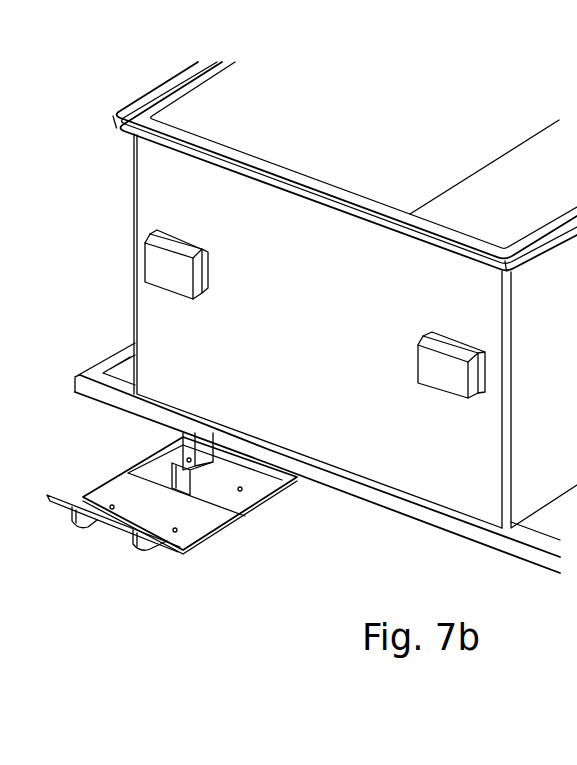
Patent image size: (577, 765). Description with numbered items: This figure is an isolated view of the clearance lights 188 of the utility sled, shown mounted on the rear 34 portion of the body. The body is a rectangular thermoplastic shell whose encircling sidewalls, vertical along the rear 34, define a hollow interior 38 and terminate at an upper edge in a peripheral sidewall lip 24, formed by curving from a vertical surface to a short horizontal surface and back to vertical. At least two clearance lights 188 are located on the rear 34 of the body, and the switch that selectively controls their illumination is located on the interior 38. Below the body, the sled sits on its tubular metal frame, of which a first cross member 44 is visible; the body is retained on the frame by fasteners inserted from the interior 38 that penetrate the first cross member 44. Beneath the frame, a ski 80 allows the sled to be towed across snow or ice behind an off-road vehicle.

The sidewall lip 24 is at (210, 141).
The rear 34 is at (150, 175).
The hollow interior 38 is at (525, 177).
The first cross member 44 is at (368, 493).
The ski 80 is at (117, 570).
The clearance light 188 is at (163, 262).